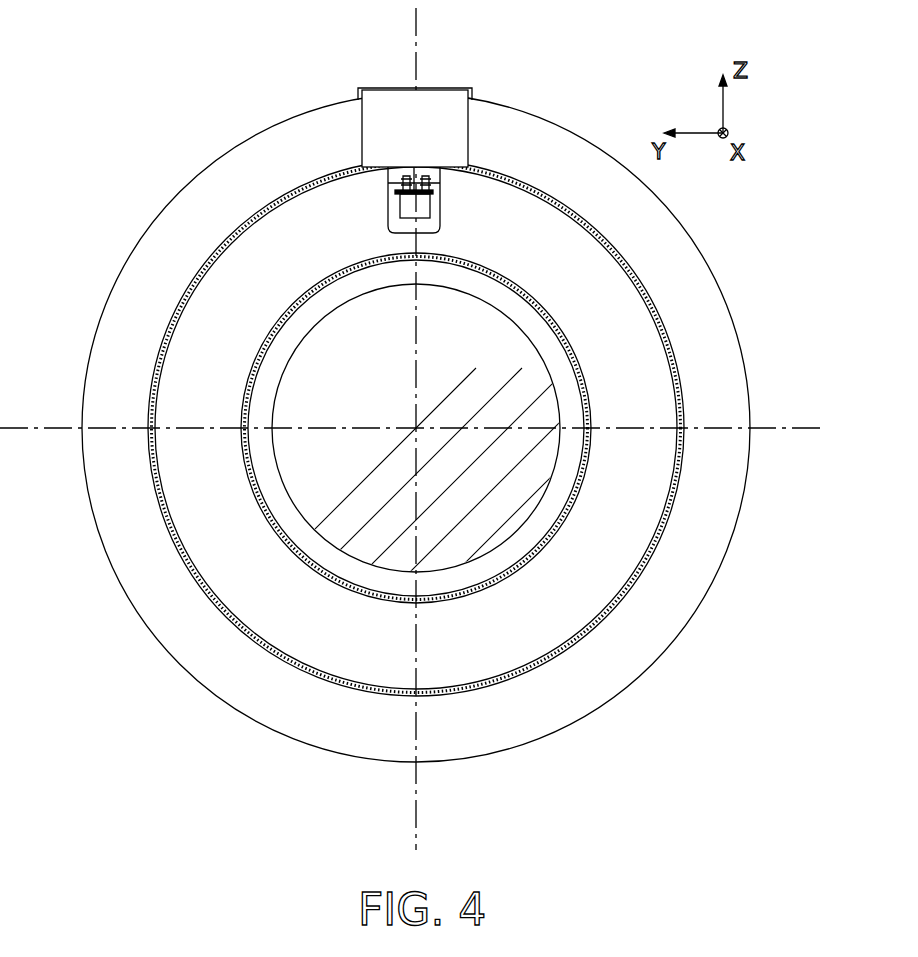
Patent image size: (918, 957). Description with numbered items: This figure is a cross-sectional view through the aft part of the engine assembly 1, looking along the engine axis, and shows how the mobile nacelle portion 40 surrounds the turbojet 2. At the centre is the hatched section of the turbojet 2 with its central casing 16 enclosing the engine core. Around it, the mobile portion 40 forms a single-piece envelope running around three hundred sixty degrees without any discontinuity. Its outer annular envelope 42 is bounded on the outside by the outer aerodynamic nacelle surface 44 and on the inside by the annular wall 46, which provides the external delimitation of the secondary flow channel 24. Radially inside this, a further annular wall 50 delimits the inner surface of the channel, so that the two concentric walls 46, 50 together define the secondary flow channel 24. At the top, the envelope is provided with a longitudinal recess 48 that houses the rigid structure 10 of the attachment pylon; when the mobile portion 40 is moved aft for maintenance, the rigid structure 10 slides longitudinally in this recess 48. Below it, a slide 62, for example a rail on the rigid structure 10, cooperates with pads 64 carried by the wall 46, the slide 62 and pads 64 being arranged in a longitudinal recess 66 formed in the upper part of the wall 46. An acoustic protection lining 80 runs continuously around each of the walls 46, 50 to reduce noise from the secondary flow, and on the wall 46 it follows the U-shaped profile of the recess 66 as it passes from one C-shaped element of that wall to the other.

The engine assembly 1 is at (288, 102).
The turbojet 2 is at (537, 391).
The rigid structure 10 is at (425, 92).
The central casing 16 is at (527, 330).
The secondary flow channel 24 is at (219, 394).
The mobile portion 40 is at (188, 668).
The outer annular envelope 42 is at (156, 259).
The outer aerodynamic nacelle surface 44 is at (102, 313).
The annular wall 46 is at (152, 372).
The longitudinal recess 48 is at (382, 90).
The annular wall 50 is at (285, 316).
The slide 62 is at (432, 204).
The pads 64 is at (392, 182).
The longitudinal recess 66 is at (400, 212).
The acoustic protection lining 80 is at (158, 510).